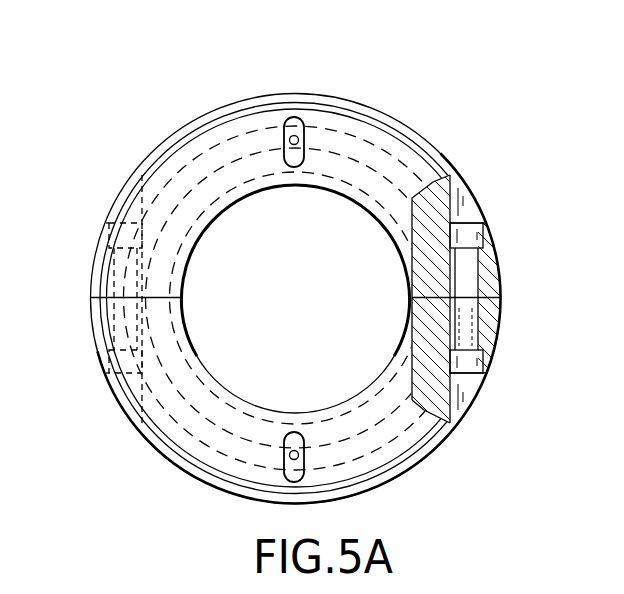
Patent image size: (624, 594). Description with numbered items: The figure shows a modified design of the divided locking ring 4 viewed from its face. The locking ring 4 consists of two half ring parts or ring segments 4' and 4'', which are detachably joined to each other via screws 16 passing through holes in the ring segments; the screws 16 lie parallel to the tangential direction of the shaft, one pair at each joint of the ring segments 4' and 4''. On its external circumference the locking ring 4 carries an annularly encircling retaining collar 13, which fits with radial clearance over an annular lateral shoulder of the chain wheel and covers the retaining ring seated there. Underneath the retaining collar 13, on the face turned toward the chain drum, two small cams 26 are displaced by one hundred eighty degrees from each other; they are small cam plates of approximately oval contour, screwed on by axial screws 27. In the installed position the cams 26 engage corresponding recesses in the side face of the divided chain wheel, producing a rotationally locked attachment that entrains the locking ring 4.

The locking ring 4 is at (271, 299).
The ring segment 4' is at (296, 250).
The ring segment 4'' is at (276, 345).
The retaining collar 13 is at (165, 145).
The screw 16 is at (117, 270).
The cam 26 is at (297, 124).
The axial screw 27 is at (289, 140).